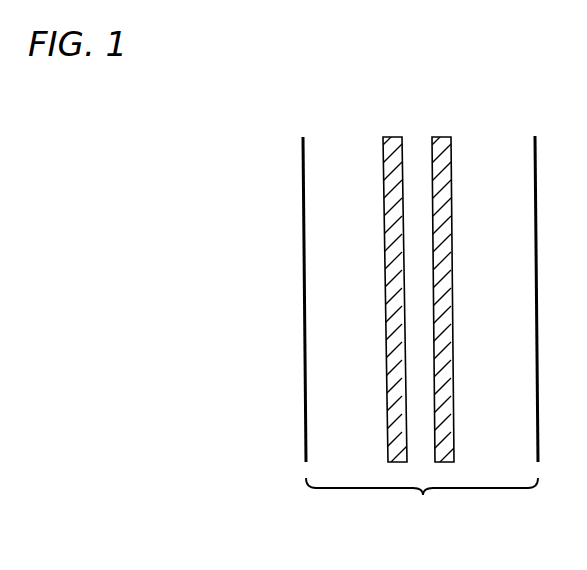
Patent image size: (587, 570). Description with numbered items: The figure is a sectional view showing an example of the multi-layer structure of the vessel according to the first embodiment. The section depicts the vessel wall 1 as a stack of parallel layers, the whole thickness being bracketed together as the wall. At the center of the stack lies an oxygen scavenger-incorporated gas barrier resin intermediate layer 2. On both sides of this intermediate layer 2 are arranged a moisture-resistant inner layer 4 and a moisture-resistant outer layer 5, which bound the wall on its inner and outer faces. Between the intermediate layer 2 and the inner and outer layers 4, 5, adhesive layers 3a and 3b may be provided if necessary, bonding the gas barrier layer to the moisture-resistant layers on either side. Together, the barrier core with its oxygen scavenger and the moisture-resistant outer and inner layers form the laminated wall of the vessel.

The vessel wall 1 is at (422, 507).
The gas barrier resin intermediate layer 2 is at (417, 148).
The adhesive layer 3a is at (398, 142).
The adhesive layer 3b is at (433, 143).
The moisture-resistant inner layer 4 is at (343, 150).
The moisture-resistant outer layer 5 is at (498, 153).